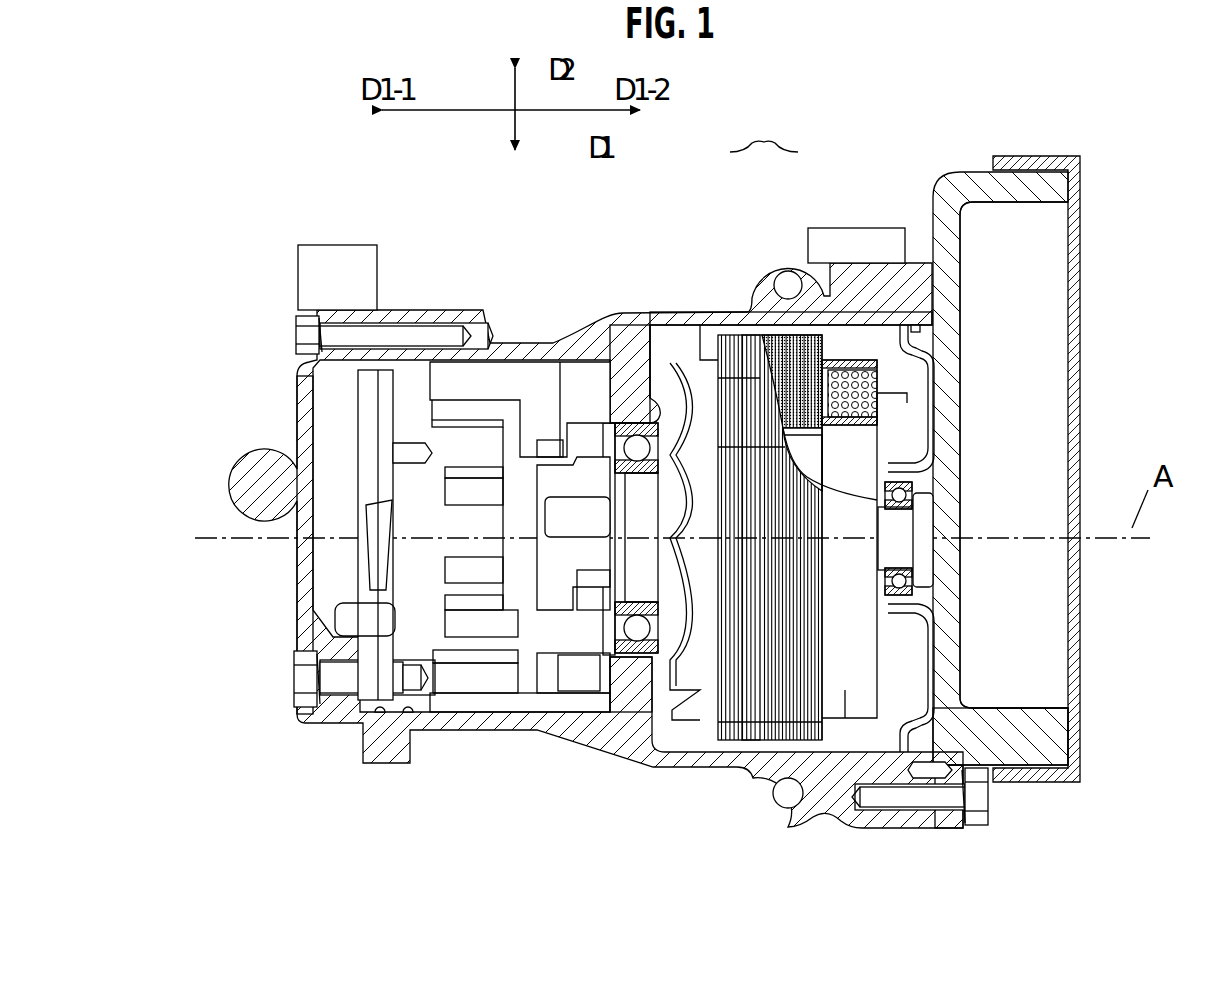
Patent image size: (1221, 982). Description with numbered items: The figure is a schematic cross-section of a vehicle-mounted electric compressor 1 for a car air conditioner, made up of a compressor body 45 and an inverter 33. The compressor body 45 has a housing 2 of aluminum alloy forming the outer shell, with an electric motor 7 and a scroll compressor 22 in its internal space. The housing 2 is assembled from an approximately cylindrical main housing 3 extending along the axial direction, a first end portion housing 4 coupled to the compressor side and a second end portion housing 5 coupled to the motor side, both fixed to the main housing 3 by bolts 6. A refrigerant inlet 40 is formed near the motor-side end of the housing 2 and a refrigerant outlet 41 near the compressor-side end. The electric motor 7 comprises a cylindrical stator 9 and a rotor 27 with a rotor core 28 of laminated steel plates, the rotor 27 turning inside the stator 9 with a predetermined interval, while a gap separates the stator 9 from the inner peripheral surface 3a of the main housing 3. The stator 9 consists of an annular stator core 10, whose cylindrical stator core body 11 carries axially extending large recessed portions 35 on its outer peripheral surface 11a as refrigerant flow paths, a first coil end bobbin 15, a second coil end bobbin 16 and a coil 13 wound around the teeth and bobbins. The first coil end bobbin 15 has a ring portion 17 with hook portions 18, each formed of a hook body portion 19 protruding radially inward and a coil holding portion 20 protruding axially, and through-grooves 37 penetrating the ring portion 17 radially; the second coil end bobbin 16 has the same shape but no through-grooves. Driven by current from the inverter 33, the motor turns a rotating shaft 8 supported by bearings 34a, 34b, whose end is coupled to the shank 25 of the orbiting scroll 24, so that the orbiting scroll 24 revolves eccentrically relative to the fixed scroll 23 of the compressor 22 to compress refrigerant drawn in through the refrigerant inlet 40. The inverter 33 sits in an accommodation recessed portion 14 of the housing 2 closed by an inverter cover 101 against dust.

The electric compressor 1 is at (190, 183).
The housing 2 is at (592, 310).
The main housing 3 is at (672, 322).
The inner peripheral surface 3a is at (860, 760).
The first end portion housing 4 is at (298, 418).
The second end portion housing 5 is at (987, 752).
The bolts 6 is at (300, 334).
The electric motor 7 is at (652, 404).
The rotating shaft 8 is at (906, 552).
The stator 9 is at (730, 333).
The stator core 10 is at (728, 742).
The stator core body 11 is at (776, 724).
The outer peripheral surface 11a is at (745, 742).
The coil 13 is at (872, 388).
The accommodation recessed portion 14 is at (1020, 708).
The first coil end bobbin 15 is at (668, 716).
The second coil end bobbin 16 is at (862, 742).
The ring portion 17 is at (662, 395).
The hook portions 18 is at (799, 309).
The hook body portion 19 is at (815, 420).
The coil holding portion 20 is at (775, 415).
The compressor 22 is at (472, 385).
The fixed scroll 23 is at (413, 645).
The orbiting scroll 24 is at (532, 658).
The shank 25 is at (573, 520).
The rotor 27 is at (832, 450).
The rotor core 28 is at (813, 462).
The inverter 33 is at (1032, 416).
The bearing 34a is at (636, 656).
The bearing 34b is at (898, 600).
The large recessed portions 35 is at (702, 358).
The through-grooves 37 is at (616, 372).
The refrigerant inlet 40 is at (868, 240).
The refrigerant outlet 41 is at (330, 258).
The compressor body 45 is at (398, 772).
The inverter cover 101 is at (1082, 733).